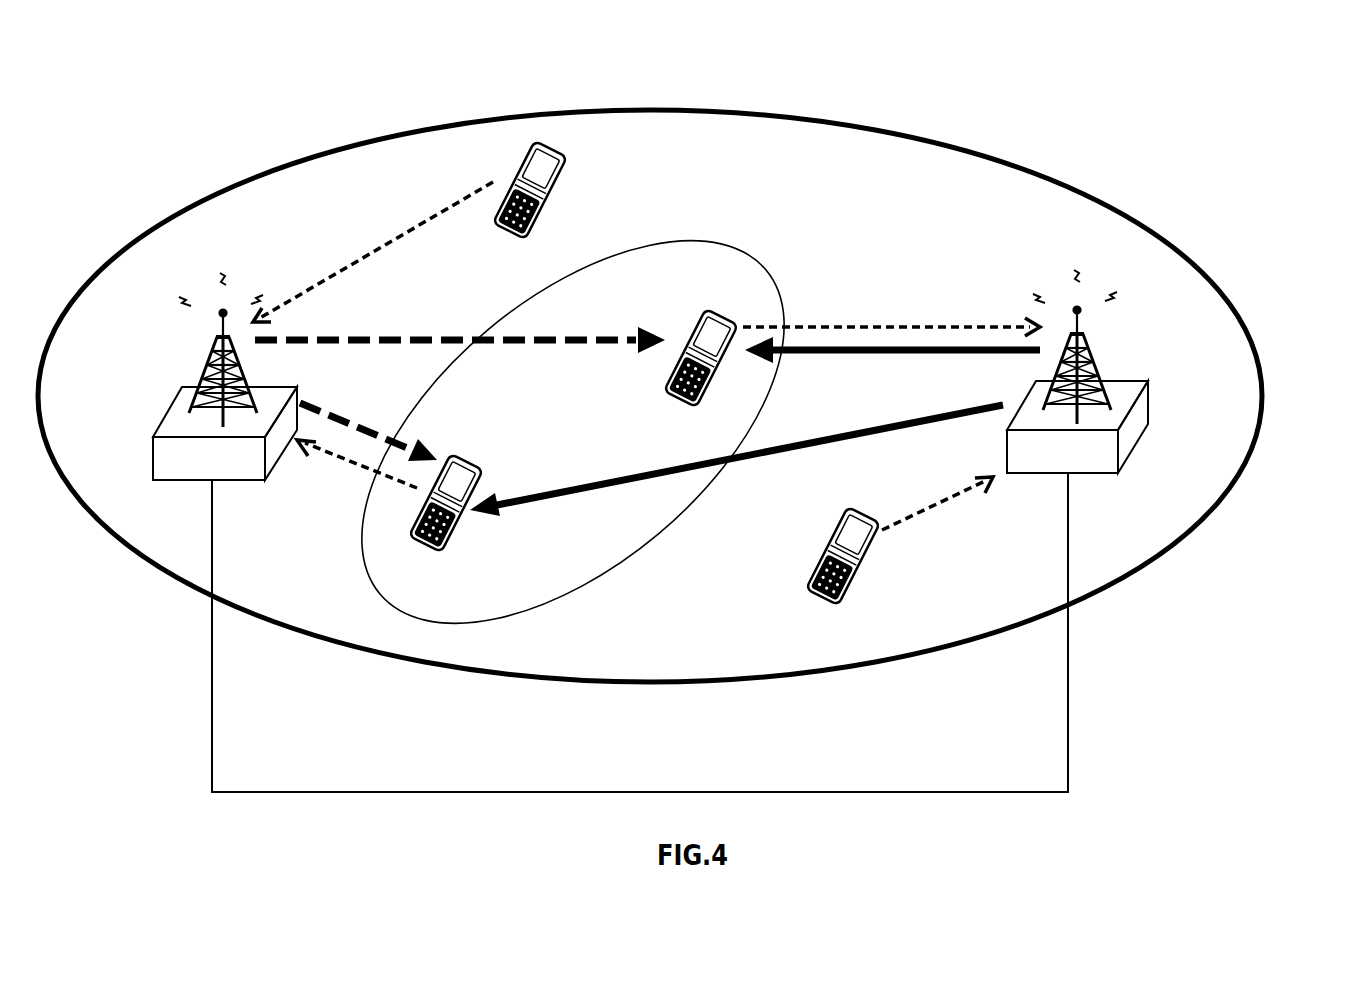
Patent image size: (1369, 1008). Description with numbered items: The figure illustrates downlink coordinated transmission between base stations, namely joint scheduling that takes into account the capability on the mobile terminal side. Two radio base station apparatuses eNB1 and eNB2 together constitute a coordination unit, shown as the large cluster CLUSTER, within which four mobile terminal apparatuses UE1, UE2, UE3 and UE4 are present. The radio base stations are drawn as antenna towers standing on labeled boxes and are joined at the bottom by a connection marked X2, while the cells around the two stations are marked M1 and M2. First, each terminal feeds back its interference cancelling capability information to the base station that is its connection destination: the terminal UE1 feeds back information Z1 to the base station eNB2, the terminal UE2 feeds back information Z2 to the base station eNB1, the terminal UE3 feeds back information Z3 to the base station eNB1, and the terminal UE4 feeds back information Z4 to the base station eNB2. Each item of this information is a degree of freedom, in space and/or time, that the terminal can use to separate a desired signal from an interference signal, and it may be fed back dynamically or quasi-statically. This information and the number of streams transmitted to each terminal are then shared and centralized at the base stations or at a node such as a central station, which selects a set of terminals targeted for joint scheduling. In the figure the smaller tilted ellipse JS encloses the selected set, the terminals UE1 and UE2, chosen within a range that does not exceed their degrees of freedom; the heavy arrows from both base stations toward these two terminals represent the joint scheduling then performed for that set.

The radio base station apparatus eNB#1 eNB1 is at (225, 376).
The radio base station apparatus eNB#2 eNB2 is at (1077, 371).
The mobile terminal apparatus UE#1 UE1 is at (694, 375).
The mobile terminal apparatus UE#2 UE2 is at (440, 519).
The mobile terminal apparatus UE#3 UE3 is at (524, 209).
The mobile terminal apparatus UE#4 UE4 is at (837, 572).
The interference cancelling capability information Z1 is at (891, 317).
The interference cancelling capability information Z2 is at (357, 469).
The interference cancelling capability information Z3 is at (373, 252).
The interference cancelling capability information Z4 is at (937, 509).
The cell of eNB#1 M1 is at (133, 301).
The cell of eNB#2 M2 is at (1176, 296).
The X2 interface between eNB#1 and eNB#2 X2 is at (640, 632).
The coordination unit (cluster) CLUSTER is at (1160, 550).
The set of mobile terminal apparatuses targeted for joint scheduling JS is at (960, 82).